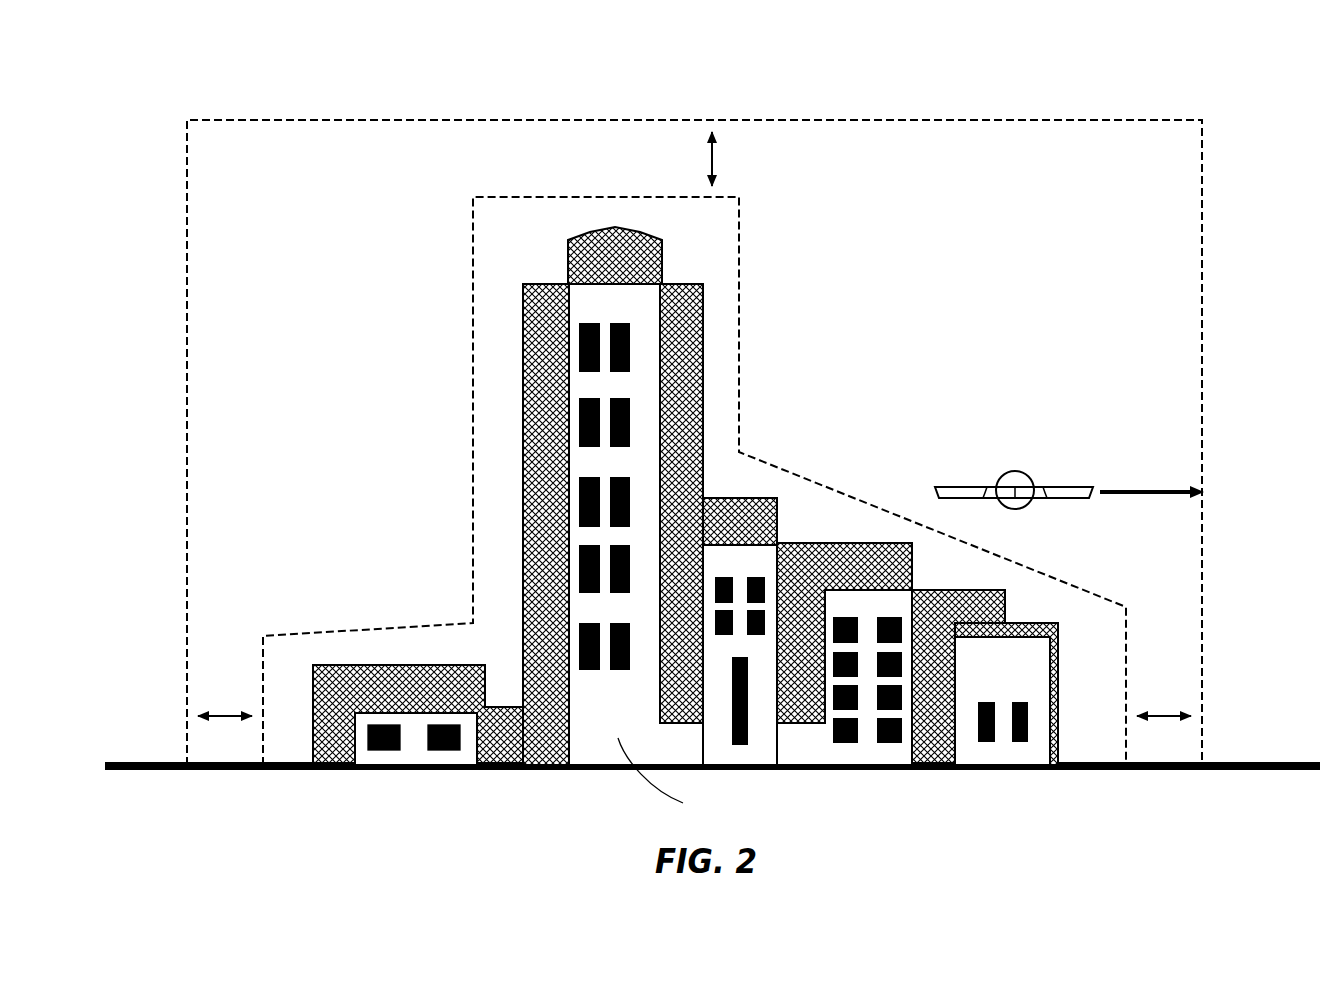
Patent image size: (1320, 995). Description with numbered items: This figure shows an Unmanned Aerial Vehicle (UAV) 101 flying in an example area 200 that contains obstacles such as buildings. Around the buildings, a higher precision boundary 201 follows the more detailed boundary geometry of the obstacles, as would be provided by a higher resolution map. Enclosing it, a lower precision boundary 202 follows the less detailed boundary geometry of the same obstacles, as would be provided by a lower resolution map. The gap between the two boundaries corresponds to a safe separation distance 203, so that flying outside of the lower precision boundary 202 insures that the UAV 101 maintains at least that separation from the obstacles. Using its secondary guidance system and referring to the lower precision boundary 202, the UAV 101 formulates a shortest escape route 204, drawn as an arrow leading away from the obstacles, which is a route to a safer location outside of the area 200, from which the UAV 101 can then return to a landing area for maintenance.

The area 200 is at (253, 167).
The higher precision boundary 201 is at (248, 662).
The lower precision boundary 202 is at (278, 120).
The safe separation distance 203 is at (713, 158).
The Unmanned Aerial Vehicle (UAV) 101 is at (920, 487).
The shortest escape route 204 is at (1150, 488).